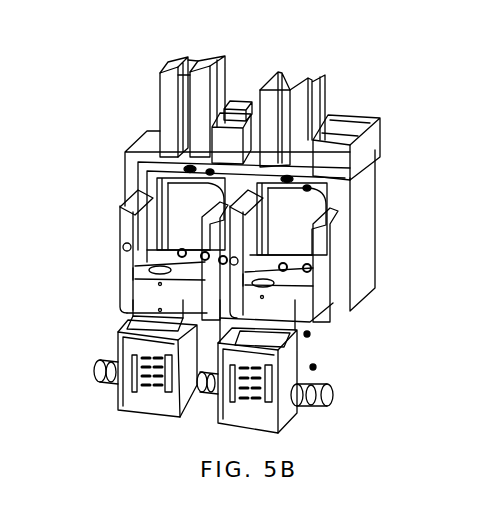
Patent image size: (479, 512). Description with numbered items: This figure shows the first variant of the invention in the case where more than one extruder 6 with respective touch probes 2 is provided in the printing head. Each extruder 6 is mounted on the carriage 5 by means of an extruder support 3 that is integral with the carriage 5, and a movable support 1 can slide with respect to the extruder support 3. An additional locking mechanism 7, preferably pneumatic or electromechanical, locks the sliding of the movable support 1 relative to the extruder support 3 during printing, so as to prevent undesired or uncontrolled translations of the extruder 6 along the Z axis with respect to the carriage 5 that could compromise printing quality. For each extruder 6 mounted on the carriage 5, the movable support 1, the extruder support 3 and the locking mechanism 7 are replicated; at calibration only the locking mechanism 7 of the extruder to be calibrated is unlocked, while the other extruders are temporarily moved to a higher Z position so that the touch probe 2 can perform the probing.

The movable support 1 is at (125, 195).
The touch probe 2 is at (244, 105).
The extruder support 3 is at (113, 286).
The carriage 5 is at (347, 290).
The extruder 6 is at (143, 342).
The locking mechanism 7 is at (180, 97).